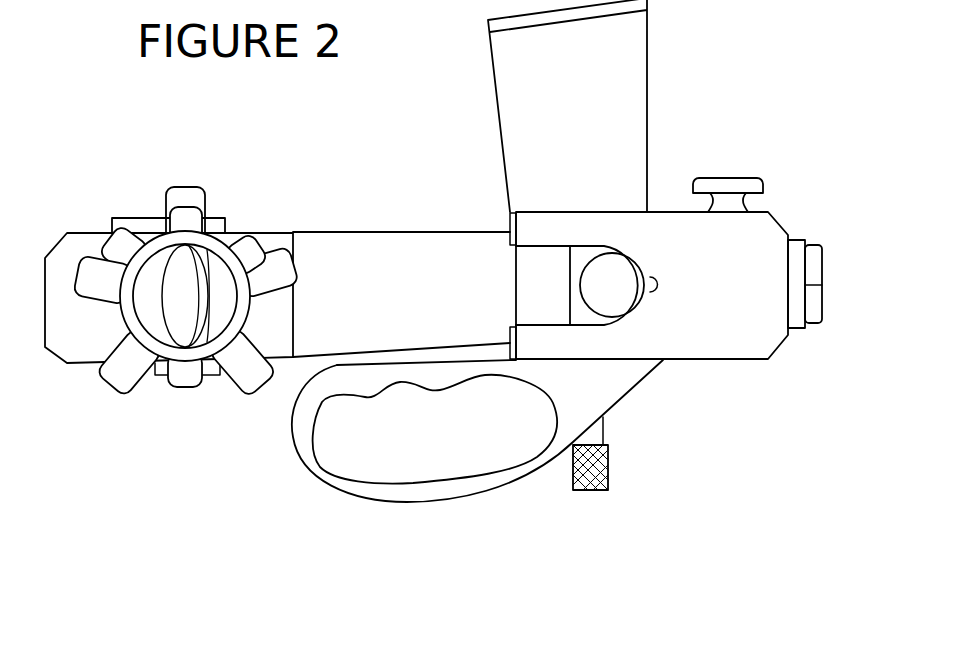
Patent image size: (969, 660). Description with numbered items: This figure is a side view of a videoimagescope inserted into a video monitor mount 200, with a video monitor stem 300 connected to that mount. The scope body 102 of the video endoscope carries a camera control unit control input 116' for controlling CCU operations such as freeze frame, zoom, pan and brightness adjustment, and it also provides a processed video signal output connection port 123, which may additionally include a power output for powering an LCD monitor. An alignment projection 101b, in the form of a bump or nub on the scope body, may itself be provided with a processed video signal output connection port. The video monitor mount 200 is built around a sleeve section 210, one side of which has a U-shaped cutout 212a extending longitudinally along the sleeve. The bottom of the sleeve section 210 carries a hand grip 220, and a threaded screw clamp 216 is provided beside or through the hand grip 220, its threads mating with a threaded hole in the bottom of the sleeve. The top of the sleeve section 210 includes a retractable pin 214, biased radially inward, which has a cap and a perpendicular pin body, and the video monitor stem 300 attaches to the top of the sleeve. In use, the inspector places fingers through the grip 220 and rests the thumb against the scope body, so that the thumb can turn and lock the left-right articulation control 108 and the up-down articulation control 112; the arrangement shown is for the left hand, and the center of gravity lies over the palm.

The camera control unit control input 116' is at (168, 189).
The scope body 102 is at (412, 247).
The processed video signal output connection port 123 is at (338, 222).
The U-shaped cutout 212a is at (542, 248).
The sleeve section 210 is at (670, 218).
The retractable pin 214 is at (757, 186).
The alignment projection 101b is at (627, 279).
The video monitor stem 300 is at (672, 75).
The video monitor mount 200 is at (705, 373).
The threaded screw clamp 216 is at (597, 428).
The hand grip 220 is at (487, 483).
The up-down articulation control 112 is at (122, 375).
The left-right articulation control 108 is at (178, 382).